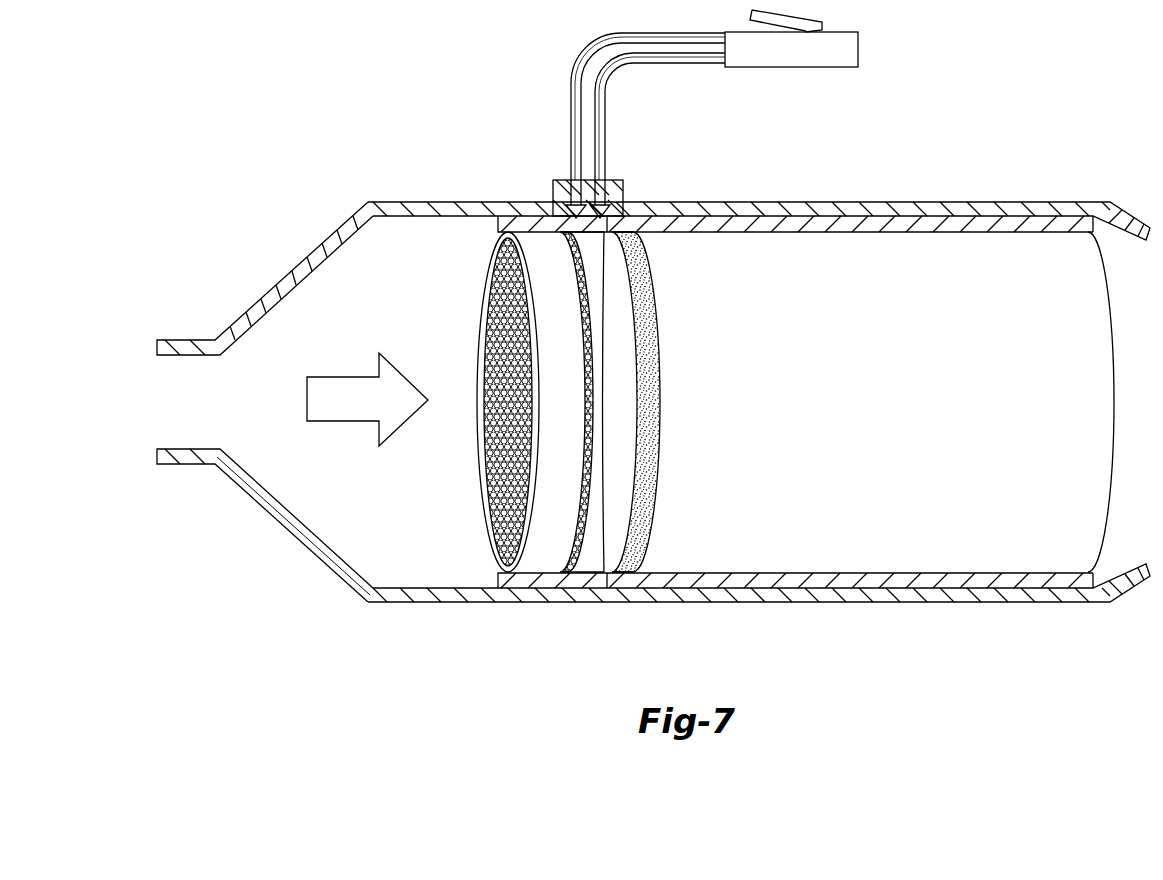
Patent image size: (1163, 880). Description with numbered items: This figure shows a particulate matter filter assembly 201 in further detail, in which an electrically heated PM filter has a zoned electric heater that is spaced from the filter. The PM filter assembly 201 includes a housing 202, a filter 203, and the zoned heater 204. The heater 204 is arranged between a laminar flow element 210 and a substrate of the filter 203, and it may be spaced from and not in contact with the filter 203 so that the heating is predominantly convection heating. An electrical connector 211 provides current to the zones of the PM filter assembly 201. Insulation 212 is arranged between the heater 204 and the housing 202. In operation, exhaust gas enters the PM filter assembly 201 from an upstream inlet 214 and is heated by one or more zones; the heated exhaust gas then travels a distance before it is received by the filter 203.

The PM filter assembly 201 is at (357, 170).
The housing 202 is at (843, 190).
The filter 203 is at (805, 407).
The zoned heater 204 is at (494, 450).
The laminar flow element 210 is at (517, 202).
The electrical connector 211 is at (858, 42).
The insulation 212 is at (497, 228).
The upstream inlet 214 is at (180, 394).